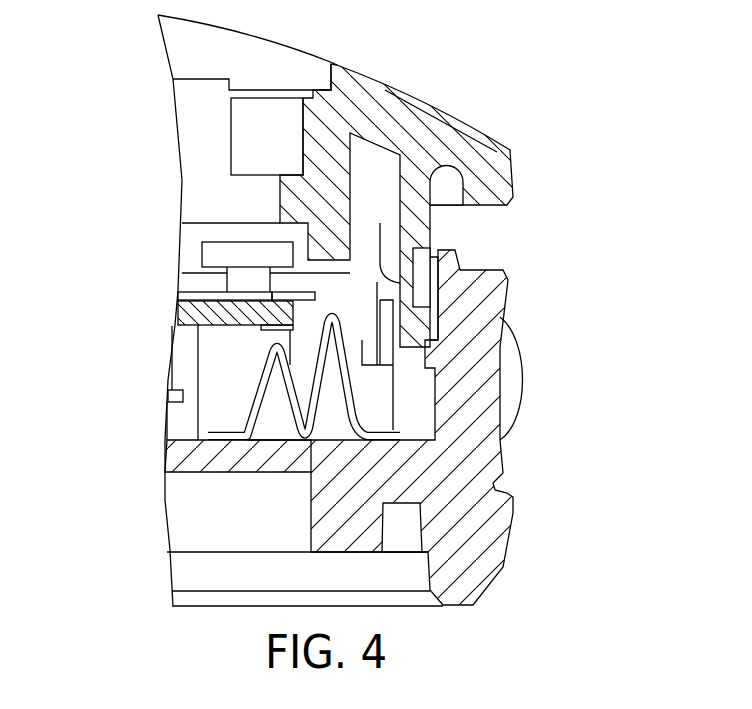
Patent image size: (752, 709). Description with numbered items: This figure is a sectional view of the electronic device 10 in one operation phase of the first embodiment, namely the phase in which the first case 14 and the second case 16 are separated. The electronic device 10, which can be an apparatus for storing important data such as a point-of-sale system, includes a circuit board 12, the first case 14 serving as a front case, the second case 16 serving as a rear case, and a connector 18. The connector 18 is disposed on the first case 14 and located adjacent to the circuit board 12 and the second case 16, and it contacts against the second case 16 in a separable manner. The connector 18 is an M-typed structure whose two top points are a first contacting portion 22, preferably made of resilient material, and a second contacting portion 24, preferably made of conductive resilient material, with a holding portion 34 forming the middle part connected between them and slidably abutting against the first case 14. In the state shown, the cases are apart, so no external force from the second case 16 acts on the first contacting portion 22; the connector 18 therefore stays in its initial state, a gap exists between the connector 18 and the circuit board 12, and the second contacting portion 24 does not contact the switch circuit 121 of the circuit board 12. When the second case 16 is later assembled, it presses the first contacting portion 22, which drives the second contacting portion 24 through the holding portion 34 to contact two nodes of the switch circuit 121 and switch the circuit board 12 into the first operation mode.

The electronic device 10 is at (566, 70).
The circuit board 12 is at (179, 313).
The switch circuit 121 is at (262, 328).
The first case 14 is at (500, 548).
The second case 16 is at (405, 123).
The connector 18 is at (337, 367).
The first contacting portion 22 is at (333, 313).
The second contacting portion 24 is at (260, 353).
The holding portion 34 is at (287, 468).